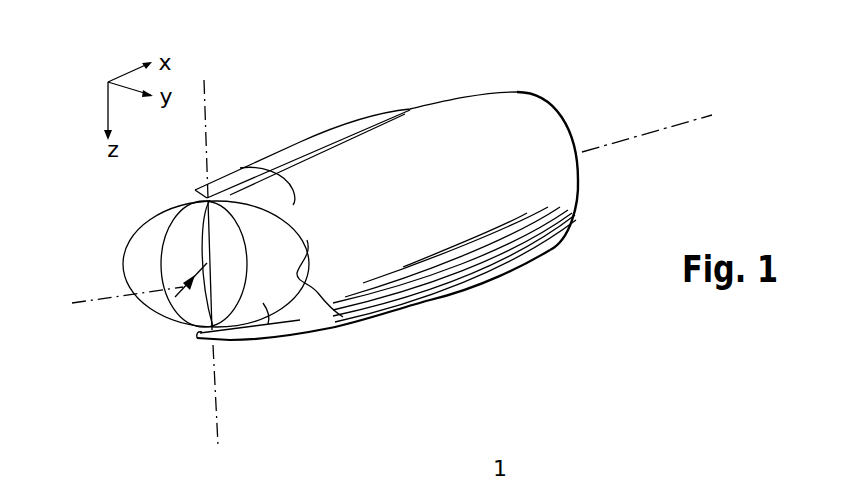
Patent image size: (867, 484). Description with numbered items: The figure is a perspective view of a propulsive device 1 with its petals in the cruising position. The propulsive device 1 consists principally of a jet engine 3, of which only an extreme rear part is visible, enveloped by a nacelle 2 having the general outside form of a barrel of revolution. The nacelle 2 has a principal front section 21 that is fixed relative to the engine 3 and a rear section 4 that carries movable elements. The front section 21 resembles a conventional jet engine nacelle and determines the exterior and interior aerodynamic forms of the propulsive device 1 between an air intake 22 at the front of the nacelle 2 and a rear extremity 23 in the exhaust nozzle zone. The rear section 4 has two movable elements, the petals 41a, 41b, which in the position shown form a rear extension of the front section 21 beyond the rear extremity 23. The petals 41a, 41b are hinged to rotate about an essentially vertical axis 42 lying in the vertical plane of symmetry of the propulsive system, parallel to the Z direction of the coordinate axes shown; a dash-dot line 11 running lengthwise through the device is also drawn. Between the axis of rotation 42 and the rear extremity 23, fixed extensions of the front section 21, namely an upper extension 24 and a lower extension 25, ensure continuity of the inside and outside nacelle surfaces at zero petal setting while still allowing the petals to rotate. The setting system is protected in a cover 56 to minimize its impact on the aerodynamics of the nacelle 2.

The propulsive device 1 is at (306, 92).
The nacelle 2 is at (551, 262).
The jet engine 3 is at (160, 310).
The rear section 4 is at (232, 400).
The longitudinal axis 11 is at (96, 312).
The front section 21 is at (460, 238).
The air intake 22 is at (580, 178).
The rear extremity 23 is at (347, 317).
The upper extension 24 is at (278, 198).
The lower extension 25 is at (284, 323).
The petal 41a is at (263, 307).
The petal 41b is at (142, 256).
The axis of rotation 42 is at (205, 97).
The cover 56 is at (318, 140).